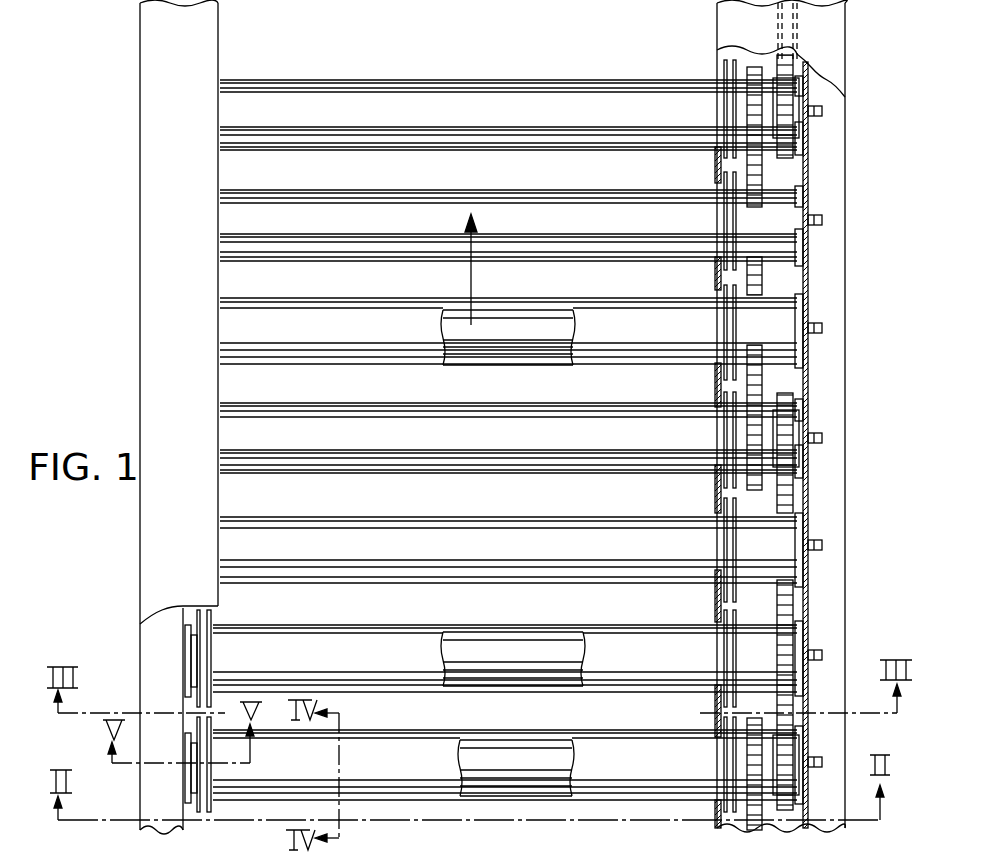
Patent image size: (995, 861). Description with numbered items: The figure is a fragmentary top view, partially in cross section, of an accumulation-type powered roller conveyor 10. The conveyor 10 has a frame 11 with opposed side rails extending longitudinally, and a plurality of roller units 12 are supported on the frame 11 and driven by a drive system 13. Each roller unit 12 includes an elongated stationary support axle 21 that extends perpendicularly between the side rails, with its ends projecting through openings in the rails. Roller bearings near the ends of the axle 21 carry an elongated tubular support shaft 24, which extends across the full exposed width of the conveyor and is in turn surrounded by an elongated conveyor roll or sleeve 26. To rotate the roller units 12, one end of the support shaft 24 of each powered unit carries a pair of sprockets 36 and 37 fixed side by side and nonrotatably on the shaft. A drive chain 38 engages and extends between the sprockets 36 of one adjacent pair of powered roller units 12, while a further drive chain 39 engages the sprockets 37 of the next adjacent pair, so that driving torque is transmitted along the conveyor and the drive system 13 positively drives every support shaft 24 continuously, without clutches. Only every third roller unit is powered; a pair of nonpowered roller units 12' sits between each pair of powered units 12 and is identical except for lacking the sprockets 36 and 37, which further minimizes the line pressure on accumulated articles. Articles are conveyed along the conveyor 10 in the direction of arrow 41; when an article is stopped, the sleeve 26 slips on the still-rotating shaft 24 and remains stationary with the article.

The accumulation-type powered roller conveyor 10 is at (100, 288).
The frame 11 is at (855, 241).
The roller unit 12 is at (508, 252).
The nonpowered roller unit 12' is at (505, 422).
The drive system 13 is at (806, 487).
The stationary support axle 21 is at (820, 755).
The tubular support shaft 24 is at (528, 642).
The conveyor sleeve 26 is at (405, 770).
The sprocket 36 is at (740, 758).
The sprocket 37 is at (785, 117).
The drive chain 38 is at (755, 378).
The drive chain 39 is at (800, 30).
The arrow 41 is at (471, 275).